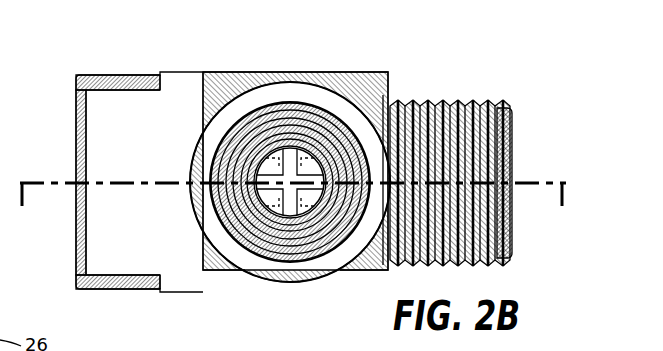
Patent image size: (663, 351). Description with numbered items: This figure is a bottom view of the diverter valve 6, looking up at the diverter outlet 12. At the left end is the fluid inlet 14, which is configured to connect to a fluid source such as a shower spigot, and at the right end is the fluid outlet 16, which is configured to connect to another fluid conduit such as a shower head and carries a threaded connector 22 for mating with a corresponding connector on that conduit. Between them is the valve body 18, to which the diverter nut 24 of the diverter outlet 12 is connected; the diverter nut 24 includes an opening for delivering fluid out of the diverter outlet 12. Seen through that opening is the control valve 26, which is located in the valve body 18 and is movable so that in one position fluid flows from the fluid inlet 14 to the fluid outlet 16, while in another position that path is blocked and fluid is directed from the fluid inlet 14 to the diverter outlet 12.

The diverter valve 6 is at (364, 30).
The fluid inlet 14 is at (139, 90).
The valve body 18 is at (233, 88).
The diverter nut 24 is at (338, 92).
The diverter outlet 12 is at (246, 258).
The control valve 26 is at (296, 204).
The threaded connector 22 is at (461, 100).
The fluid outlet 16 is at (513, 112).